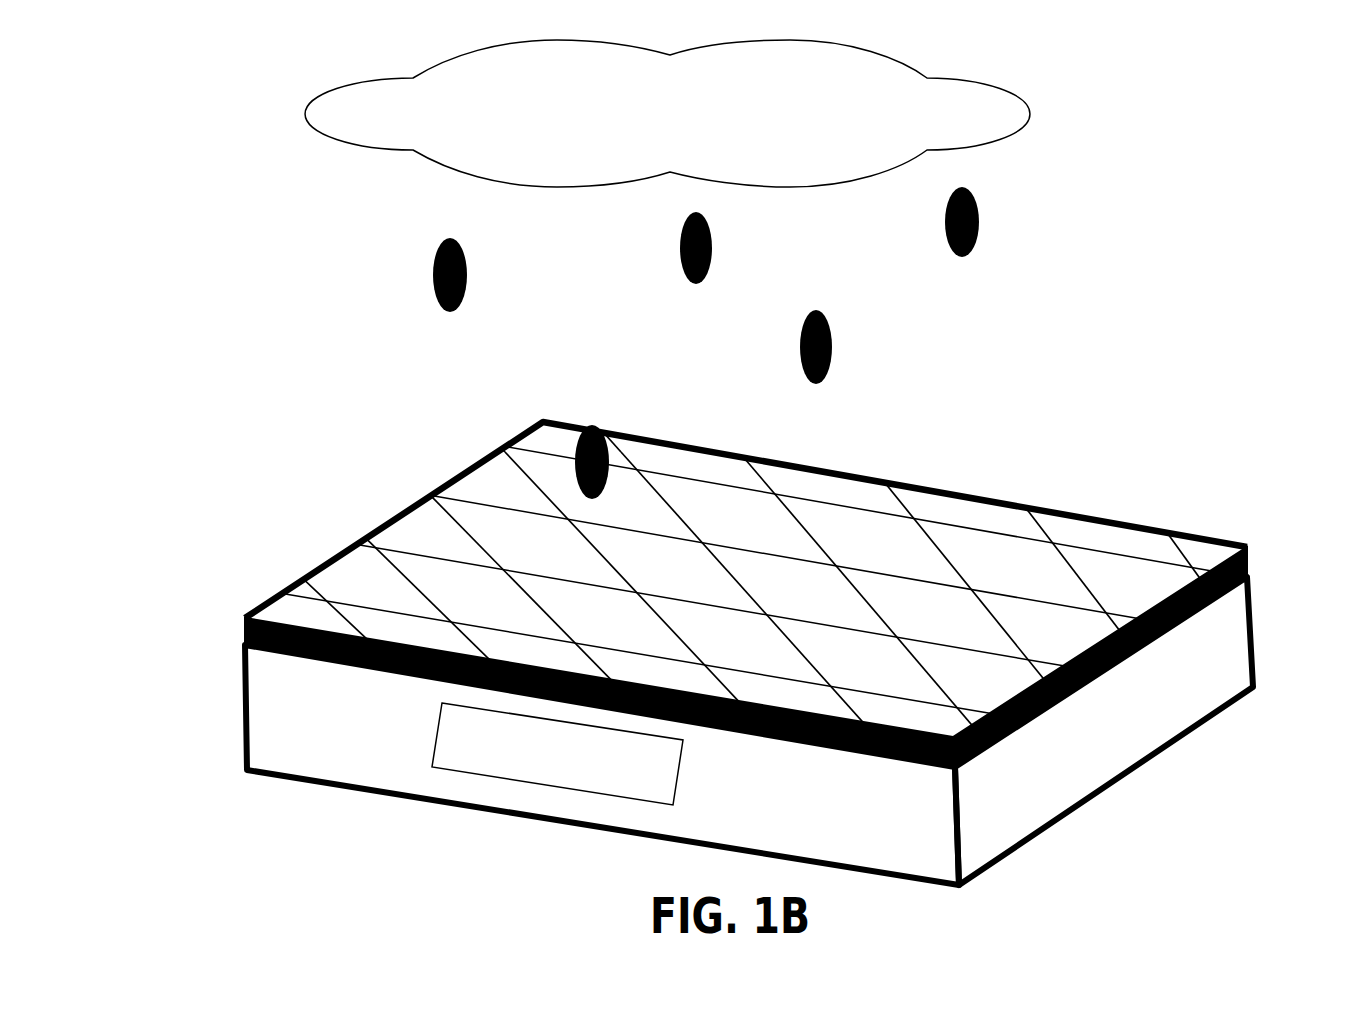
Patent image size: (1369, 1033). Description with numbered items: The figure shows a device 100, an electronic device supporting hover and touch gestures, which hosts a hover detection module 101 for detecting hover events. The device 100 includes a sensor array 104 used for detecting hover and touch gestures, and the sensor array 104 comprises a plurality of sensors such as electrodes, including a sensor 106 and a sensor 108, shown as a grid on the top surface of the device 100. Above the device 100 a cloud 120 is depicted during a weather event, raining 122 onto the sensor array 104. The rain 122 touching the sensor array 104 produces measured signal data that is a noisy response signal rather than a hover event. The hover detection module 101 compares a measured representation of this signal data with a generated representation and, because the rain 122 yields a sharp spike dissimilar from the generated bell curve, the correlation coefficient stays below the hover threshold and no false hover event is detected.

The device 100 is at (148, 102).
The hover detection module 101 is at (683, 778).
The sensor array 104 is at (1250, 549).
The sensor 106 is at (878, 507).
The sensor 108 is at (1010, 533).
The cloud 120 is at (1032, 115).
The rain 122 is at (466, 276).